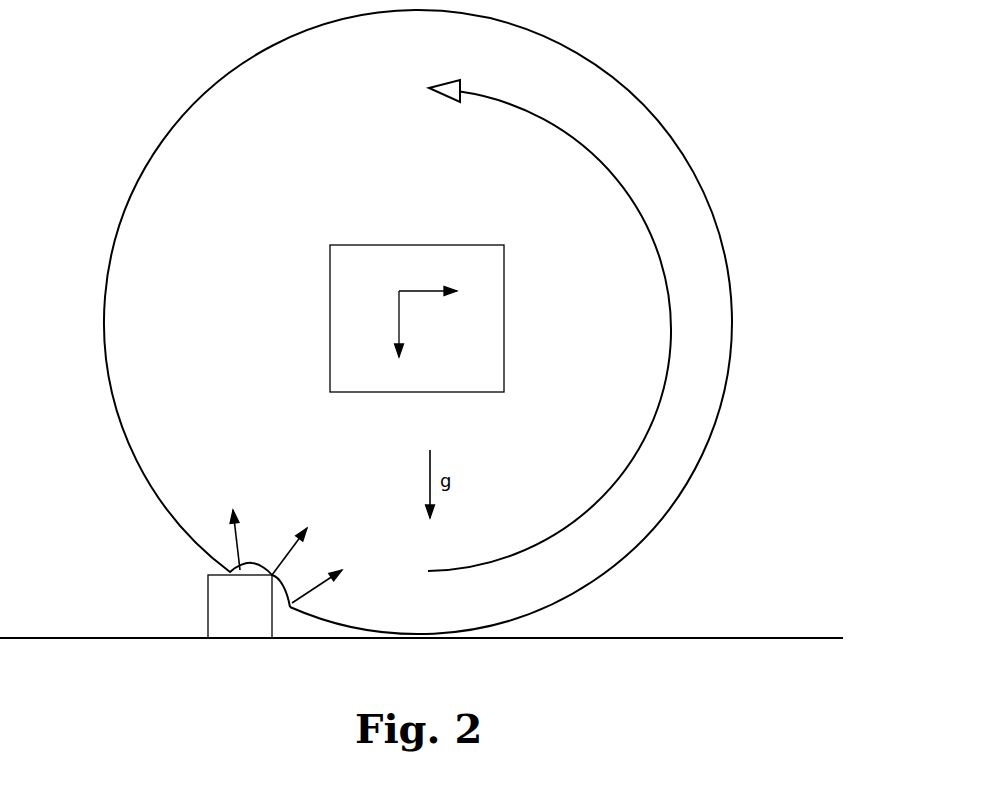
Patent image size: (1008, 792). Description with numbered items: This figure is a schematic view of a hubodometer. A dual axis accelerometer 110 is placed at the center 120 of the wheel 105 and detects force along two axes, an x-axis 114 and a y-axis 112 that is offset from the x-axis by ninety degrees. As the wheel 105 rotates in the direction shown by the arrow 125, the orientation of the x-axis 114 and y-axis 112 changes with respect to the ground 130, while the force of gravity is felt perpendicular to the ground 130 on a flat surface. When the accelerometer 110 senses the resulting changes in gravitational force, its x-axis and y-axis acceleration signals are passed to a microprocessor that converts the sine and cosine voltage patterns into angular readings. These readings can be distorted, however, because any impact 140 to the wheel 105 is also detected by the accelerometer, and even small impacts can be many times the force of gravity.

The wheel 105 is at (196, 110).
The dual axis accelerometer 110 is at (330, 318).
The y-axis 112 is at (389, 326).
The x-axis 114 is at (429, 294).
The center 120 is at (530, 255).
The arrow 125 is at (658, 396).
The ground 130 is at (672, 638).
The impact 140 is at (208, 603).